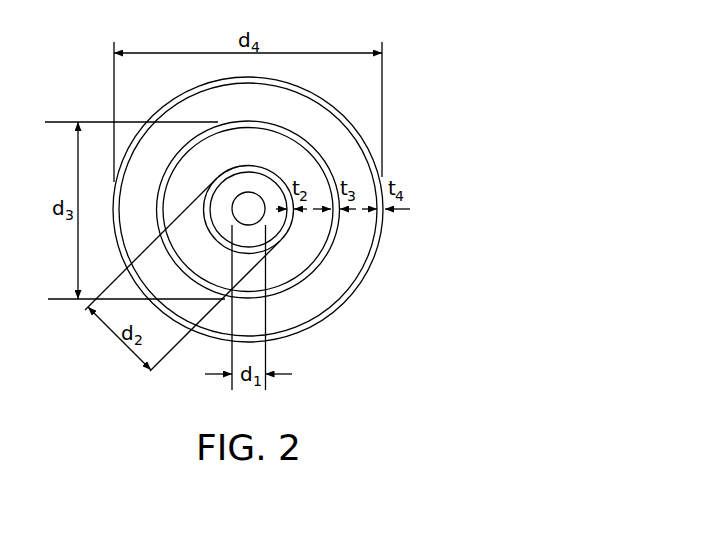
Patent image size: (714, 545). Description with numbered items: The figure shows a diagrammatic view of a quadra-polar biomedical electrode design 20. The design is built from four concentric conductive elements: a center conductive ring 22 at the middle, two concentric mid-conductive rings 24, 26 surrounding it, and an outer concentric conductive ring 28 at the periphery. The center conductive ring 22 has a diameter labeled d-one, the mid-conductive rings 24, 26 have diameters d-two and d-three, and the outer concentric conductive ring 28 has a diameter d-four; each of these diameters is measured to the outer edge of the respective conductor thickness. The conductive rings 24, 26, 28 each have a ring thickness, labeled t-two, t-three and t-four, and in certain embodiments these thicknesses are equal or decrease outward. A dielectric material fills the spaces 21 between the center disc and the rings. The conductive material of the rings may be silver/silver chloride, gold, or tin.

The biomedical electrode design 20 is at (425, 46).
The spaces 21 is at (267, 192).
The center conductive ring 22 is at (261, 219).
The mid-conductive ring 24 is at (249, 165).
The mid-conductive ring 26 is at (258, 122).
The outer concentric conductive ring 28 is at (369, 271).